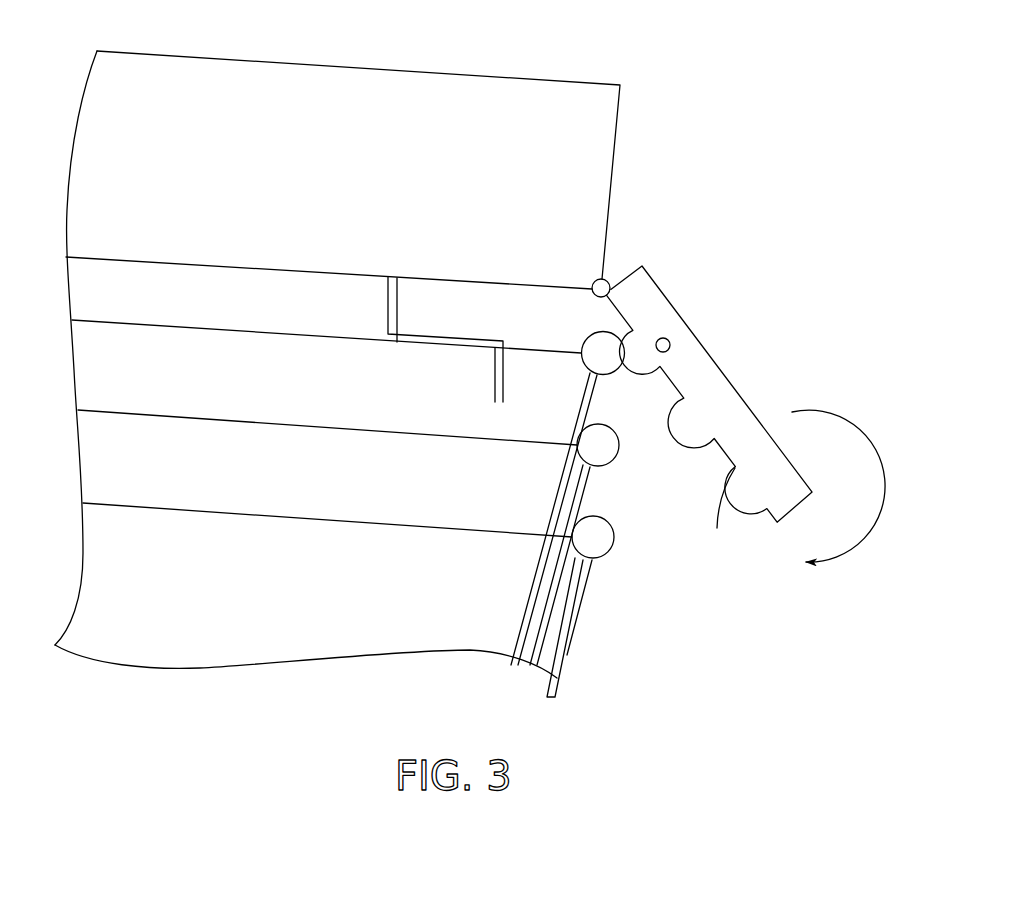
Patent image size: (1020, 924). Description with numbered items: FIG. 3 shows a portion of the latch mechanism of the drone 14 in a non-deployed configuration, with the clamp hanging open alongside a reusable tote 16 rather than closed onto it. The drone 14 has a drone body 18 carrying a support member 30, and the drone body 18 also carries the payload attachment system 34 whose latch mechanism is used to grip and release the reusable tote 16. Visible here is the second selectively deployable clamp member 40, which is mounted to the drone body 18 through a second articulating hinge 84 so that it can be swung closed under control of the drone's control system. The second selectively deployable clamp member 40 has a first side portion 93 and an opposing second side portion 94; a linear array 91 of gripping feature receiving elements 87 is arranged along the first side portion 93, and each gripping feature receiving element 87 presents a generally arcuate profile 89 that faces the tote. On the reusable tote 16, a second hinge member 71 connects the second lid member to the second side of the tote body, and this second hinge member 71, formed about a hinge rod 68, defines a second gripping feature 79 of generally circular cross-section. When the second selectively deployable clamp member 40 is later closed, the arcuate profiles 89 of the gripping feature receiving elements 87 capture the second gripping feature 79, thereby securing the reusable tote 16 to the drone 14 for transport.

The drone 14 is at (698, 170).
The reusable tote 16 is at (702, 592).
The drone body 18 is at (626, 85).
The support member 30 is at (387, 315).
The payload attachment system 34 is at (766, 299).
The second selectively deployable clamp member 40 is at (666, 284).
The hinge rod 68 is at (568, 628).
The second hinge member 71 is at (616, 559).
The second gripping feature 79 is at (603, 540).
The second articulating hinge 84 is at (607, 280).
The gripping feature receiving element 87 is at (641, 374).
The arcuate profile 89 is at (669, 344).
The linear array 91 is at (678, 428).
The first side portion 93 is at (720, 518).
The second side portion 94 is at (724, 390).